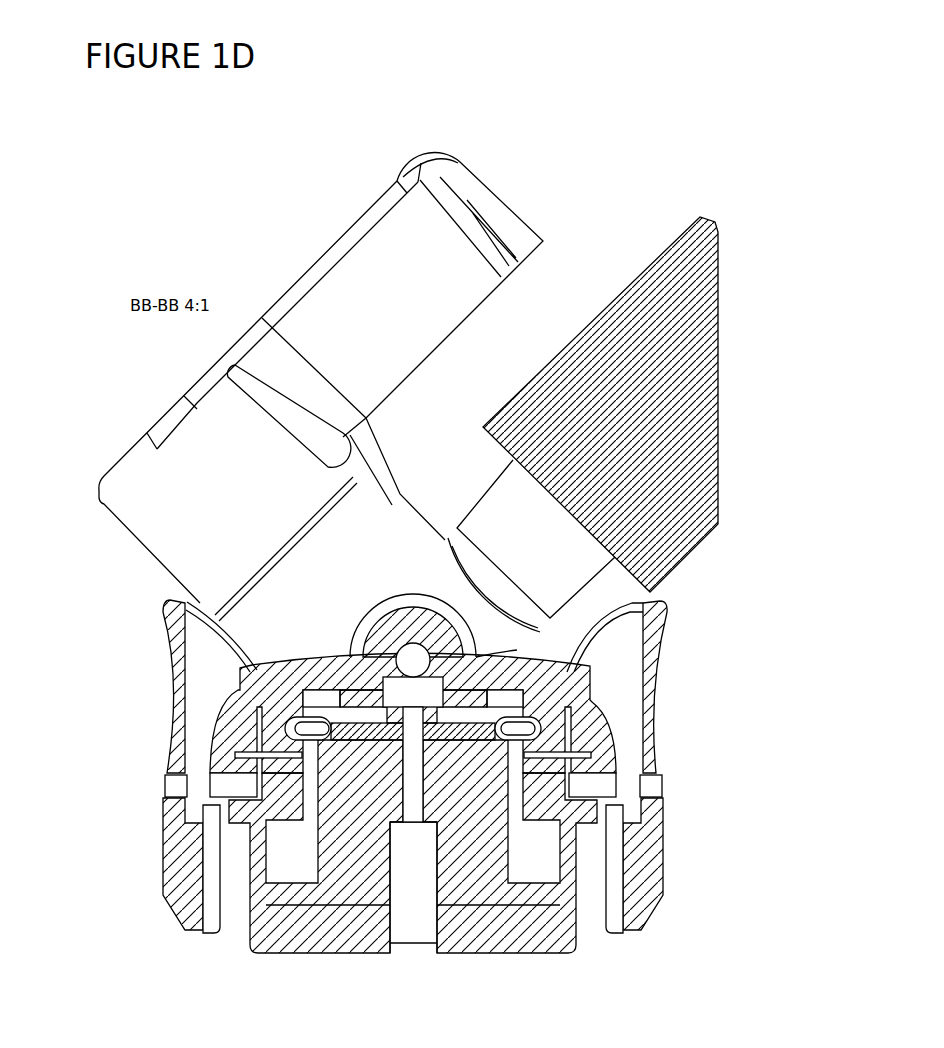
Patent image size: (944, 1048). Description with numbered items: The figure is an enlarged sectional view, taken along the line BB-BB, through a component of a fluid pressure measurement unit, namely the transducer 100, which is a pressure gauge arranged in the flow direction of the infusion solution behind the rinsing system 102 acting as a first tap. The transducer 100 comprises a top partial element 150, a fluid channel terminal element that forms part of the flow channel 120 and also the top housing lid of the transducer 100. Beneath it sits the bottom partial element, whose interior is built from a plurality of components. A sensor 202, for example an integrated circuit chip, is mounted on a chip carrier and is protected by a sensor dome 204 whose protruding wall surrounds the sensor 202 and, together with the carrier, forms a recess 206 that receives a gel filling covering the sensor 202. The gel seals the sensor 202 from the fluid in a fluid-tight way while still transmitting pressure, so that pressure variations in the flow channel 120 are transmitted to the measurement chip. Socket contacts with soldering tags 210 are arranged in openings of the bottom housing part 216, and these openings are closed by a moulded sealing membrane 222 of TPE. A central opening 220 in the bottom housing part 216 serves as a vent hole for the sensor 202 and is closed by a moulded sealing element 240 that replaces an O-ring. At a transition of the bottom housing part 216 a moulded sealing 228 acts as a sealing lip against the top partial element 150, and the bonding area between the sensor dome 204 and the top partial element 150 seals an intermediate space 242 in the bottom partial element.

The transducer 100 is at (406, 752).
The rinsing system 102 is at (614, 230).
The flow channel 120 is at (370, 647).
The top partial element 150 is at (517, 650).
The sensor 202 is at (318, 662).
The sensor dome 204 is at (240, 668).
The recess 206 is at (525, 610).
The soldering tags 210 is at (362, 712).
The bottom housing part 216 is at (258, 868).
The central opening 220 is at (400, 897).
The moulded sealing membrane 222 is at (510, 948).
The moulded sealing 228 is at (242, 753).
The sealing element 240 is at (558, 716).
The intermediate space 242 is at (280, 806).